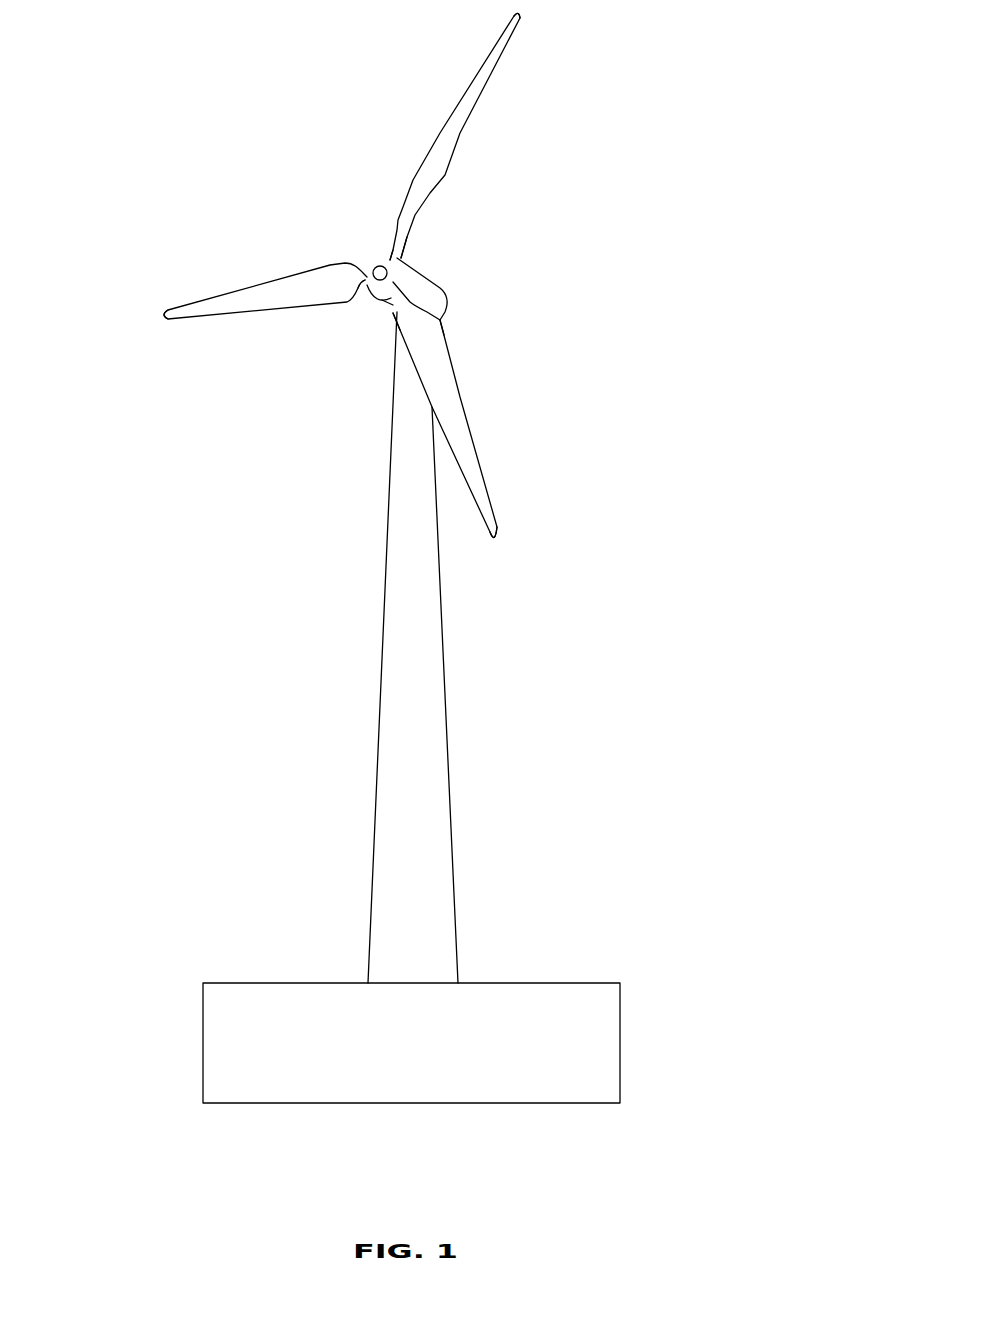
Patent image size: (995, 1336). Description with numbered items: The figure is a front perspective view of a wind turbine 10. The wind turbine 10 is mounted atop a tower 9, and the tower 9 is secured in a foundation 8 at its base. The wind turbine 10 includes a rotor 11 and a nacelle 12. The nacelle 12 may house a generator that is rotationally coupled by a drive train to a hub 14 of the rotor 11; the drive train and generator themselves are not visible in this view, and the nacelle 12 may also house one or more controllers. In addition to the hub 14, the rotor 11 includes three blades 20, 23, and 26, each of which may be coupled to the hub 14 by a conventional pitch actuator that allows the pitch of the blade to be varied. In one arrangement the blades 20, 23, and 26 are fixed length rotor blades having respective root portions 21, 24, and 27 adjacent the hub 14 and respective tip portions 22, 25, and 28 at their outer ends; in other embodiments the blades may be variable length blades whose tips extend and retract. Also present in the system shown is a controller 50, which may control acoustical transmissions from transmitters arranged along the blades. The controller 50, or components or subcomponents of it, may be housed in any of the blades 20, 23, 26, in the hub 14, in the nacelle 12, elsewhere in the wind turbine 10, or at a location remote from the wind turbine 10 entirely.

The foundation 8 is at (570, 983).
The tower 9 is at (445, 690).
The wind turbine 10 is at (98, 412).
The rotor 11 is at (600, 186).
The nacelle 12 is at (438, 280).
The hub 14 is at (372, 267).
The blade 20 is at (440, 133).
The root portion 21 is at (390, 250).
The tip portion 22 is at (521, 19).
The blade 23 is at (460, 397).
The root portion 24 is at (393, 302).
The tip portion 25 is at (493, 540).
The blade 26 is at (243, 277).
The root portion 27 is at (363, 287).
The tip portion 28 is at (165, 311).
The controller 50 is at (676, 796).